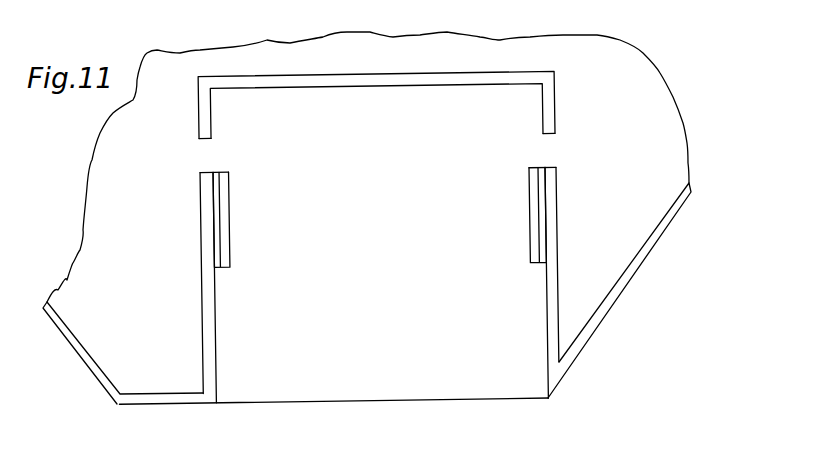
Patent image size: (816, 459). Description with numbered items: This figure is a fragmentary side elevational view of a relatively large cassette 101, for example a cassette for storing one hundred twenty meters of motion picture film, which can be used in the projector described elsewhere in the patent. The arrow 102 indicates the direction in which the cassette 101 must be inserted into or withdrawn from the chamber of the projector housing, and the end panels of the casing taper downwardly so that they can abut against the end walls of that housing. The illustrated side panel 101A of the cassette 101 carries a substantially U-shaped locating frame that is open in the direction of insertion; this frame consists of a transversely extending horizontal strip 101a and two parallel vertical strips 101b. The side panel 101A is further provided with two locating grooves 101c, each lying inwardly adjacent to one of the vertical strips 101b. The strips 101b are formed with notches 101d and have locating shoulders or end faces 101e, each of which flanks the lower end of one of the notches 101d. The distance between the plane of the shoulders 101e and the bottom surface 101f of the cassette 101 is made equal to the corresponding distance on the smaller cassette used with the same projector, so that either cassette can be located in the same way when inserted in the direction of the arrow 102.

The cassette 101 is at (179, 52).
The horizontal strip 101a is at (337, 72).
The vertical strips 101b is at (213, 330).
The locating grooves 101c is at (252, 247).
The notches 101d is at (207, 148).
The locating shoulders or end faces 101e is at (200, 172).
The bottom surface 101f is at (467, 398).
The side panel 101A is at (380, 191).
The arrow 102 is at (371, 400).